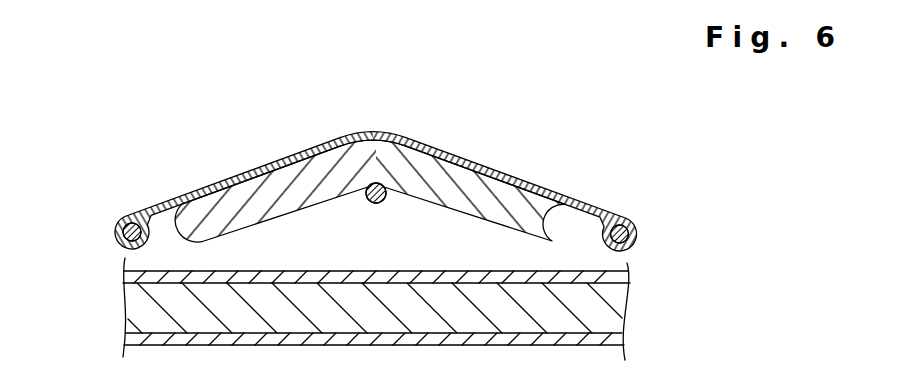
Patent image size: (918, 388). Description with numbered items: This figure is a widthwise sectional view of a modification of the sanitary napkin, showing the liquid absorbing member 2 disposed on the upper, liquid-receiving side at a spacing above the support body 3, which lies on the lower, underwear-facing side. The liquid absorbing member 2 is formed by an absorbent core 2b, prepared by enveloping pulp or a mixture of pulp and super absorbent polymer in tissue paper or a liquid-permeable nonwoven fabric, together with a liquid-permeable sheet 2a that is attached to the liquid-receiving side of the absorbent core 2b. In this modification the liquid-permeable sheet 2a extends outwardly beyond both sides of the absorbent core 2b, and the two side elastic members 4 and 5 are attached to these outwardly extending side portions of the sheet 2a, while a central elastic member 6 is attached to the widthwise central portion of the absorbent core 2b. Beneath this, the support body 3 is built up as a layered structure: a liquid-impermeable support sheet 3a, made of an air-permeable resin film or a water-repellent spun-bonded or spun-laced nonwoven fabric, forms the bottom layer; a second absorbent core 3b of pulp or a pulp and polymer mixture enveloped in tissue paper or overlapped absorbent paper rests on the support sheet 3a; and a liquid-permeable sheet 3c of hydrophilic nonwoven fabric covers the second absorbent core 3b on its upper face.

The liquid absorbing member 2 is at (527, 156).
The liquid-permeable sheet 2a is at (245, 171).
The absorbent core 2b is at (470, 193).
The support body 3 is at (449, 310).
The support sheet 3a is at (431, 348).
The second absorbent core 3b is at (613, 315).
The liquid-permeable sheet 3c is at (628, 279).
The side elastic member 4 is at (638, 233).
The side elastic member 5 is at (115, 232).
The central elastic member 6 is at (382, 202).